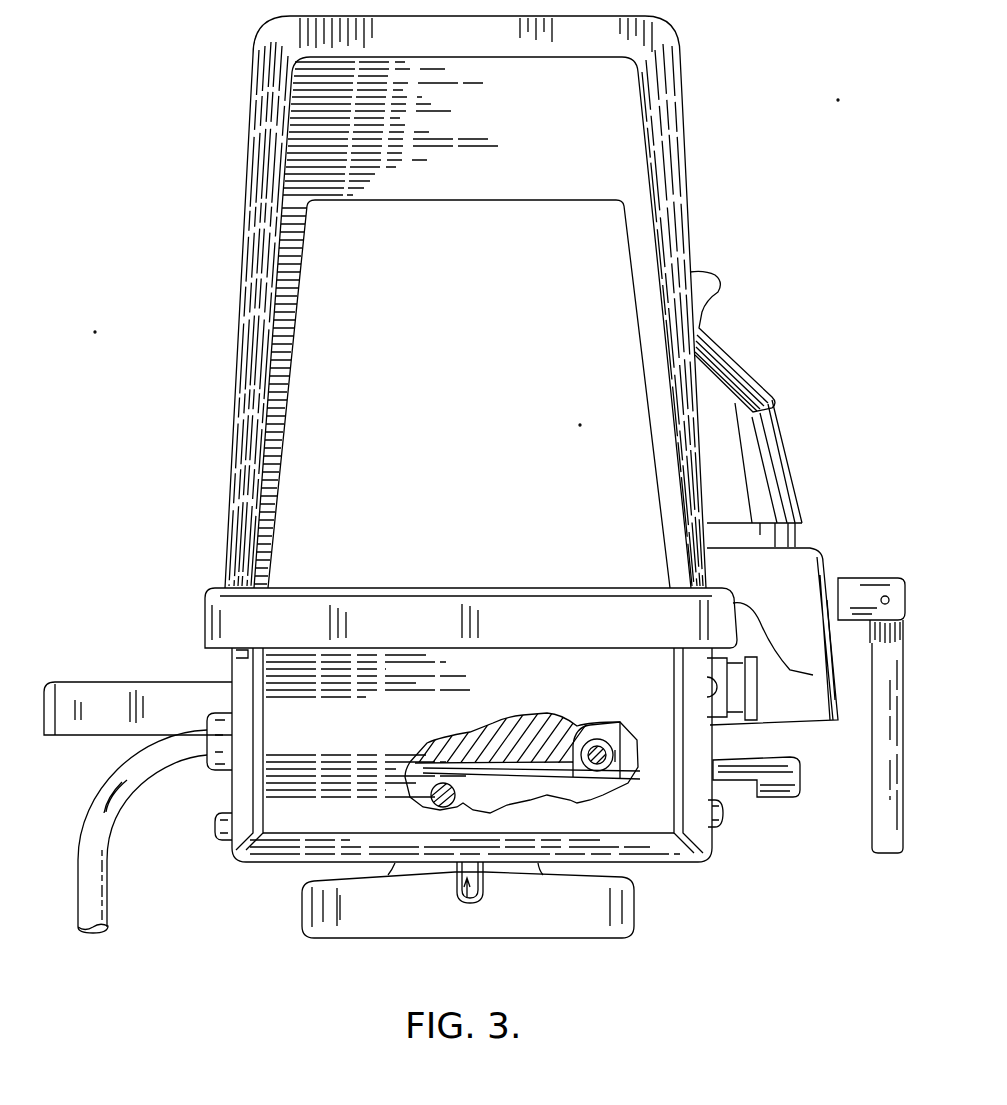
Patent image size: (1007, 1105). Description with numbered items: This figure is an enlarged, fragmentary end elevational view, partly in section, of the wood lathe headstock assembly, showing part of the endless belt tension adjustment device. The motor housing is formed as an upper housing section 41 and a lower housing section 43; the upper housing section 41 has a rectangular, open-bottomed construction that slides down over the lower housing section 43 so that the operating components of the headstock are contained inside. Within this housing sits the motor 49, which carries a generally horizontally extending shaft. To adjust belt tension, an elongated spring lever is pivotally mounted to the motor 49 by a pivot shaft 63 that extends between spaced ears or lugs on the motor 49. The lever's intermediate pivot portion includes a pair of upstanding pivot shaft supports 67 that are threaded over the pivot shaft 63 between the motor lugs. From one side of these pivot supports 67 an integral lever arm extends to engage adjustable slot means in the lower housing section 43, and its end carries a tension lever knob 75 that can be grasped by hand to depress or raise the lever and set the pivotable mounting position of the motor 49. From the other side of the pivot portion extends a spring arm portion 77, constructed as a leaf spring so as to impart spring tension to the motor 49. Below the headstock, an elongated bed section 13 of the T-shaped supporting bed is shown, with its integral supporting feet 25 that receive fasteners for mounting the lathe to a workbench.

The upper housing section 41 is at (257, 316).
The lower housing section 43 is at (243, 777).
The motor 49 is at (447, 755).
The pivot shaft 63 is at (603, 763).
The pivot shaft supports 67 is at (617, 753).
The spring arm portion 77 is at (523, 772).
The tension lever knob 75 is at (787, 787).
The supporting feet 25 is at (388, 920).
The elongated bed section 13 is at (468, 890).